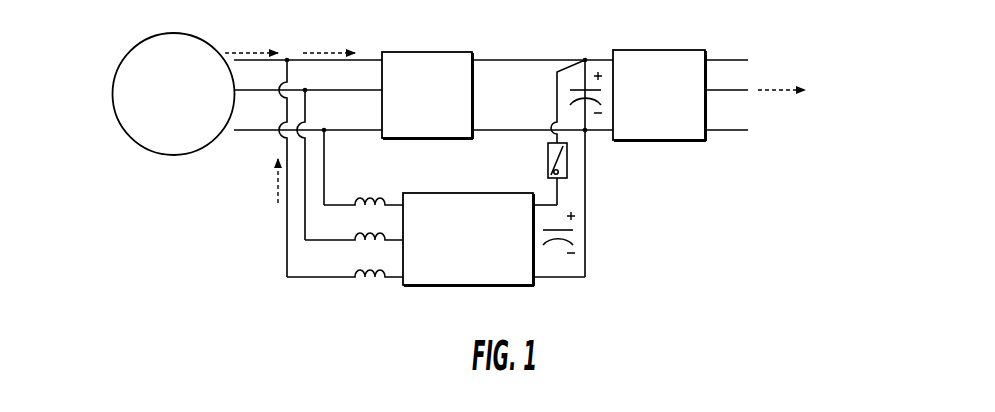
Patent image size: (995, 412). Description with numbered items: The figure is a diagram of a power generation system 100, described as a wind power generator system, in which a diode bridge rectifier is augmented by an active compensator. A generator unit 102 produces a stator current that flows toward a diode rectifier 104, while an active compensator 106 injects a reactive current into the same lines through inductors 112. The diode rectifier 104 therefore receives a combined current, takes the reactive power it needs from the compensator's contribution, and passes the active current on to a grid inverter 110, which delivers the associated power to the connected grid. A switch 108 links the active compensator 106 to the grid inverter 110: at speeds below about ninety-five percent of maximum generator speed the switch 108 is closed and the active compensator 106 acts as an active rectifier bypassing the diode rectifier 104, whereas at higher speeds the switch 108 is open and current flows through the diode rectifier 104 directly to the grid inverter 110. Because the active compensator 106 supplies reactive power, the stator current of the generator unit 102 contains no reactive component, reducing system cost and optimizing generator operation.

The power generation system 100 is at (91, 99).
The generator unit 102 is at (160, 156).
The diode rectifier 104 is at (437, 138).
The active compensator 106 is at (418, 193).
The switch 108 is at (567, 167).
The grid inverter 110 is at (645, 140).
The inductors 112 is at (352, 283).